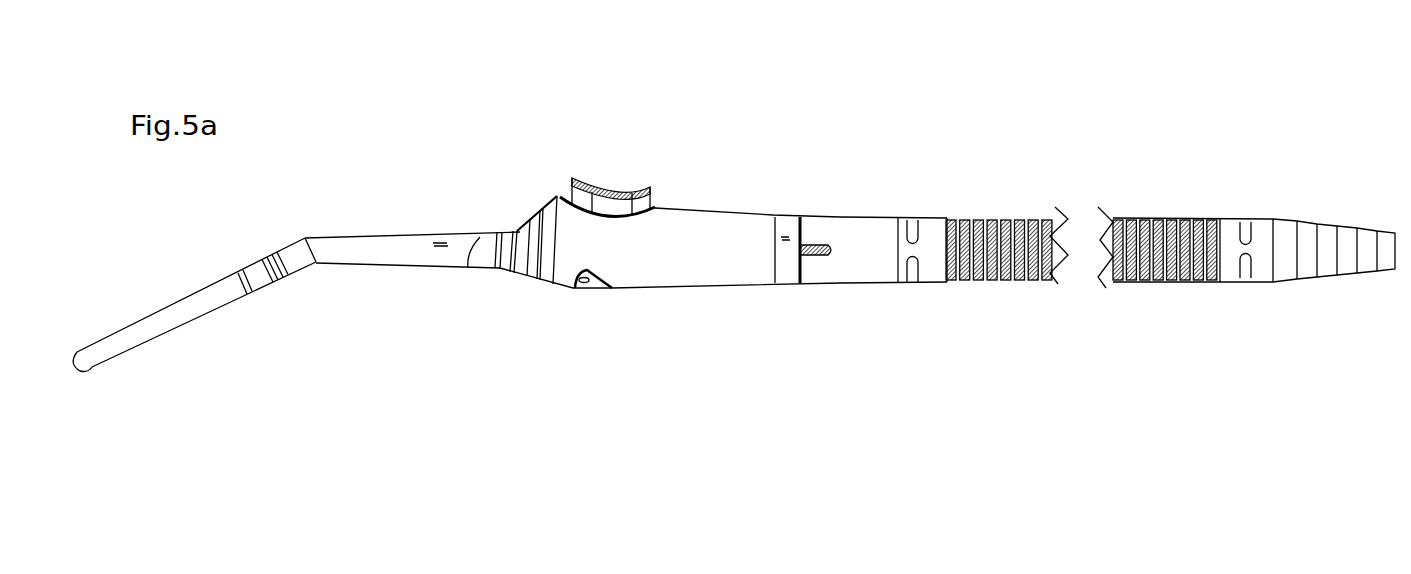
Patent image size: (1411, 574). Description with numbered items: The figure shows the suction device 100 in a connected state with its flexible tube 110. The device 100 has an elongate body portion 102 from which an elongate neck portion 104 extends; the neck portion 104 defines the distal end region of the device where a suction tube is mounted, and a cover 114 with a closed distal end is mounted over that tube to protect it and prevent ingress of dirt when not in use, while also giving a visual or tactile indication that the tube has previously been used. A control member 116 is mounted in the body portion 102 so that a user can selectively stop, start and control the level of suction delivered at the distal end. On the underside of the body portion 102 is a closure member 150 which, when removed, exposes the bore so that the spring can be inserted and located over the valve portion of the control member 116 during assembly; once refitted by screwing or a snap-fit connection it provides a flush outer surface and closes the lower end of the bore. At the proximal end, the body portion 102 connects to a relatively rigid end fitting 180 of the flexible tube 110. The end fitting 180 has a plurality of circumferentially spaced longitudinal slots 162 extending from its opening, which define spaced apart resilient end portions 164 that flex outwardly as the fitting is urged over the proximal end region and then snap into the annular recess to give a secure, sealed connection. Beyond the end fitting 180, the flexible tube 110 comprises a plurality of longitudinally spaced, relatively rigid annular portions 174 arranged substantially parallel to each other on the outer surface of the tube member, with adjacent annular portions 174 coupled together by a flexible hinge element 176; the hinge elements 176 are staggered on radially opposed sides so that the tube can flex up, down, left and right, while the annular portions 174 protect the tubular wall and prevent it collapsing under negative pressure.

The suction device 100 is at (511, 147).
The body portion 102 is at (688, 257).
The neck portion 104 is at (380, 242).
The flexible tube 110 is at (1013, 280).
The cover 114 is at (173, 315).
The control member 116 is at (617, 178).
The closure member 150 is at (582, 290).
The slots 162 is at (817, 247).
The resilient end portions 164 is at (808, 227).
The annular portions 174 is at (1140, 220).
The flexible hinge element 176 is at (1202, 222).
The end fitting 180 is at (860, 277).